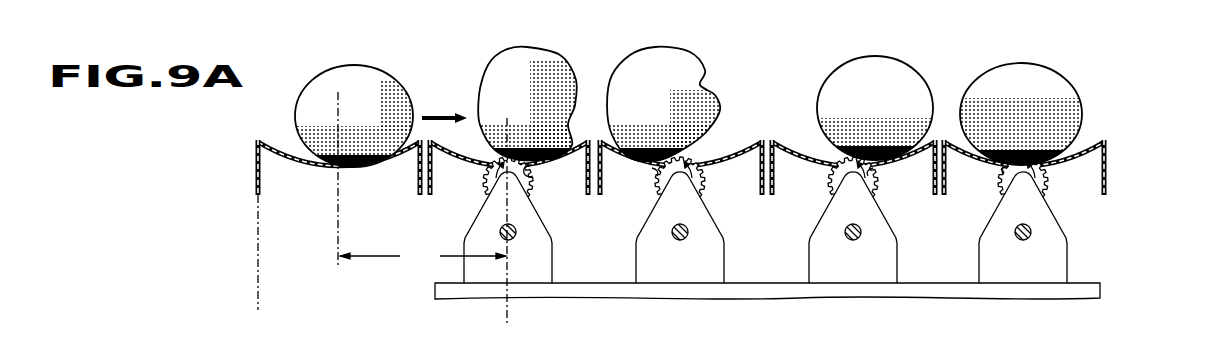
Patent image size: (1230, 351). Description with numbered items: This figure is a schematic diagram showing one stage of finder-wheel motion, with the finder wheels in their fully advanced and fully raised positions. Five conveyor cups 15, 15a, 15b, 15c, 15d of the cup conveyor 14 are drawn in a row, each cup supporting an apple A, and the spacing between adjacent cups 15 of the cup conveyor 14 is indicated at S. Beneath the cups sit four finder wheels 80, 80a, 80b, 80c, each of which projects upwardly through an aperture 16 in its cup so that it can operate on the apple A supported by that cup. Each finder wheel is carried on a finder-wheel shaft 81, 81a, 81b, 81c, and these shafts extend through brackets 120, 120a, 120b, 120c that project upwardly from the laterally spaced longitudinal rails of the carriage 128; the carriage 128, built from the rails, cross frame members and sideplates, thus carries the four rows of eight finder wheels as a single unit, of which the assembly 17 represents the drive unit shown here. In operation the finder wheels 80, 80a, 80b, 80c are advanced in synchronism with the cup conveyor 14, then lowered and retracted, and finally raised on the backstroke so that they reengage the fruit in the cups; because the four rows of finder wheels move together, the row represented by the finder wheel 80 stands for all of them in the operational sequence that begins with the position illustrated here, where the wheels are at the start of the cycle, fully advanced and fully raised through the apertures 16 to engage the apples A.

The cup conveyor 14 is at (1122, 157).
The conveyor cup 15 is at (262, 141).
The conveyor cup 15a is at (478, 158).
The conveyor cup 15b is at (745, 148).
The conveyor cup 15c is at (798, 148).
The conveyor cup 15d is at (1100, 143).
The aperture 16 is at (351, 160).
The drive unit 17 is at (1097, 258).
The finder wheel 80 is at (486, 190).
The finder wheel 80a is at (666, 181).
The finder wheel 80b is at (828, 185).
The finder wheel 80c is at (1010, 182).
The finder-wheel shaft 81 is at (498, 230).
The finder-wheel shaft 81a is at (690, 230).
The finder-wheel shaft 81b is at (843, 232).
The finder-wheel shaft 81c is at (1032, 232).
The bracket 120 is at (550, 240).
The bracket 120a is at (638, 249).
The bracket 120b is at (896, 239).
The bracket 120c is at (982, 256).
The carriage 128 is at (1112, 283).
The apple A is at (478, 62).
The spacing S is at (423, 255).